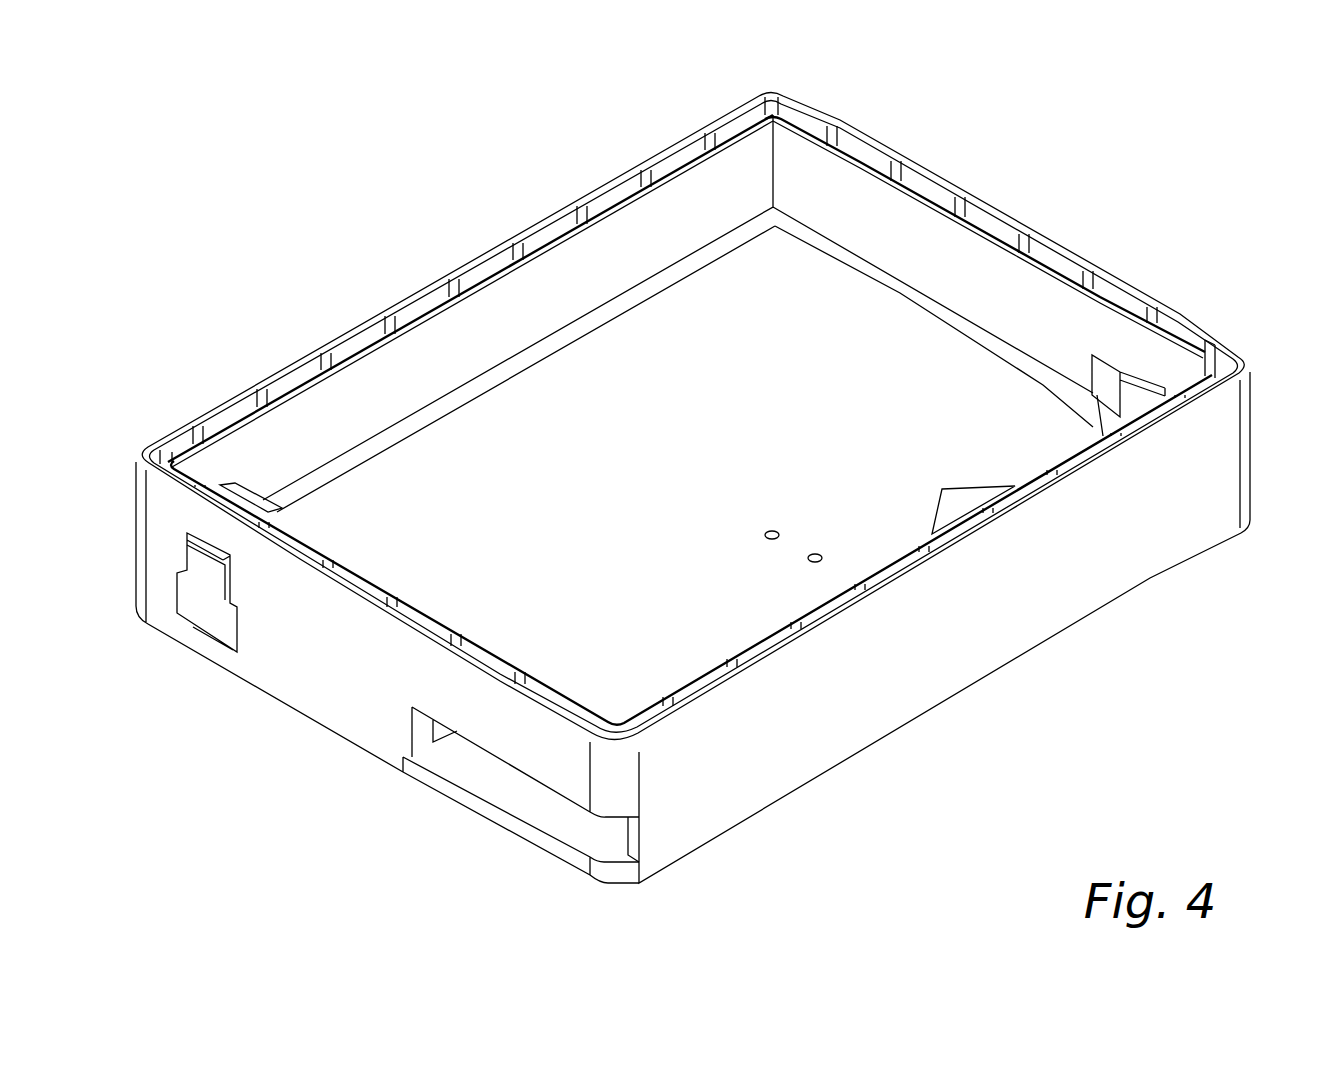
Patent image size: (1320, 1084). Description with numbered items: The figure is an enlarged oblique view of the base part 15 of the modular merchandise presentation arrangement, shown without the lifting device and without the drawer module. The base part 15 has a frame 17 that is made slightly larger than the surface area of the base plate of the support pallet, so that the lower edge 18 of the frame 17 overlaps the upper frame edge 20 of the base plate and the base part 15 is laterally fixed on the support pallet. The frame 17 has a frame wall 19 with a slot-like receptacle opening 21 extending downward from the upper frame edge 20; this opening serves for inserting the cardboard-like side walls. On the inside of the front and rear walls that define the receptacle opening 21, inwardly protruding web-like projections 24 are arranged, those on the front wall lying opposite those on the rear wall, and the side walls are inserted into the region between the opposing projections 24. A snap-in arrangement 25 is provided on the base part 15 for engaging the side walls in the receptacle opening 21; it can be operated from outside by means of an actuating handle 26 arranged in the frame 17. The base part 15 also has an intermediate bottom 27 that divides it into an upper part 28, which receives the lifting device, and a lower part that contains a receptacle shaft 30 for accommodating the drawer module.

The base part 15 is at (1066, 218).
The frame 17 is at (1023, 607).
The lower edge 18 is at (820, 778).
The frame wall 19 is at (1096, 547).
The upper frame edge 20 is at (724, 656).
The receptacle opening 21 is at (363, 330).
The web-like projections 24 is at (559, 202).
The snap-in arrangement 25 is at (206, 601).
The actuating handle 26 is at (233, 619).
The intermediate bottom 27 is at (653, 442).
The upper part 28 is at (838, 316).
The receptacle shaft 30 is at (516, 785).